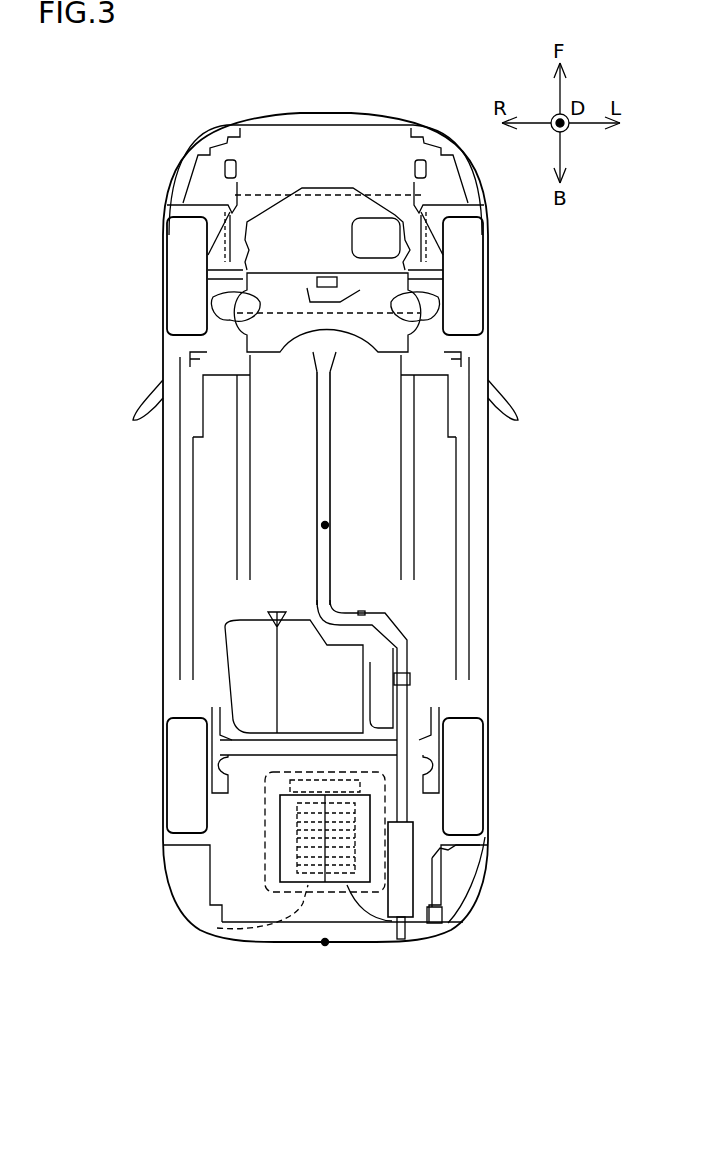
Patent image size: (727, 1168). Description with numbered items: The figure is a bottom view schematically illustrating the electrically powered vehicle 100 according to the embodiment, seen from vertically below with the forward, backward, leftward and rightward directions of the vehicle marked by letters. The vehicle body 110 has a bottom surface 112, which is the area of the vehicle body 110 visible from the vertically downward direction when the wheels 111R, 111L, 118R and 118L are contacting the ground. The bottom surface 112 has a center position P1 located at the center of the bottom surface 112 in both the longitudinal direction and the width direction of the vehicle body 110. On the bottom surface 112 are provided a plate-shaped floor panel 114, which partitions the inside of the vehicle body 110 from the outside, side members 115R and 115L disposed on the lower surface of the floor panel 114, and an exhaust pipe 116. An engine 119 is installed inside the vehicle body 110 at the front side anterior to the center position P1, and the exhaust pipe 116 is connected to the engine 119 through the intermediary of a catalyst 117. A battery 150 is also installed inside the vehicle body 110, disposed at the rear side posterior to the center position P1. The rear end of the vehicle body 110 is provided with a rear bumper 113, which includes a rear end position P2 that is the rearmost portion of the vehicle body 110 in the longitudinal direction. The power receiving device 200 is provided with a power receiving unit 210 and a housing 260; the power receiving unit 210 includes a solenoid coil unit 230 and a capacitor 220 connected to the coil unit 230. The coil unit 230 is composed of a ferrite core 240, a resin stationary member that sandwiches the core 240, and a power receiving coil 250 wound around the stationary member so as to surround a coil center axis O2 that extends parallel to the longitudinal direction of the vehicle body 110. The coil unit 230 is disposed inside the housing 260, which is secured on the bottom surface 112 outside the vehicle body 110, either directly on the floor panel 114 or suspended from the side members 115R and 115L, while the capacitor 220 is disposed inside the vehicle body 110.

The electrically powered vehicle 100 is at (176, 104).
The vehicle body 110 is at (325, 112).
The engine 119 is at (267, 195).
The wheel 111R is at (186, 256).
The wheel 111L is at (458, 277).
The catalyst 117 is at (323, 355).
The bottom surface 112 is at (292, 435).
The floor panel 114 is at (308, 464).
The center position P1 is at (322, 525).
The side member 115R is at (187, 562).
The side member 115L is at (460, 572).
The exhaust pipe 116 is at (397, 663).
The wheel 118L is at (463, 742).
The wheel 118R is at (186, 733).
The power receiving device 200 is at (294, 826).
The power receiving unit 210 is at (611, 778).
The capacitor 220 is at (388, 776).
The coil unit 230 is at (558, 828).
The power receiving coil 250 is at (358, 828).
The ferrite core 240 is at (357, 858).
The housing 260 is at (400, 924).
The coil center axis O2 is at (267, 876).
The battery 150 is at (217, 928).
The rear bumper 113 is at (293, 933).
The rear end position P2 is at (327, 942).